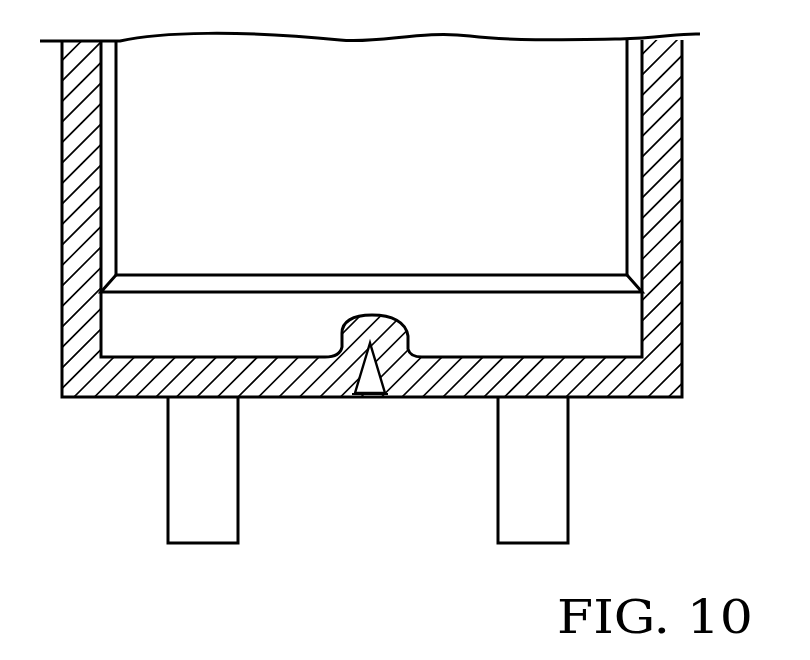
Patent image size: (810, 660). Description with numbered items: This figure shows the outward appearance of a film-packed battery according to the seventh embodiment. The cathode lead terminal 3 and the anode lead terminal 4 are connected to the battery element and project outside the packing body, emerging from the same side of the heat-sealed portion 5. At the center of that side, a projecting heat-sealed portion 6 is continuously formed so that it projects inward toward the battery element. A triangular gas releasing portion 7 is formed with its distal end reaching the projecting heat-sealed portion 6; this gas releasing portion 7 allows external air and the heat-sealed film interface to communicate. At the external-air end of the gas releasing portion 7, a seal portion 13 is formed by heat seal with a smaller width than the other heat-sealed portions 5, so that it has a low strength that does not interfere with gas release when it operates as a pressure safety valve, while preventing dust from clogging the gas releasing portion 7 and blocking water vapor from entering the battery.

The cathode lead terminal 3 is at (510, 507).
The anode lead terminal 4 is at (178, 507).
The heat-sealed portion 5 is at (672, 197).
The projecting heat-sealed portion 6 is at (392, 334).
The gas releasing portion 7 is at (398, 397).
The seal portion 13 is at (370, 397).